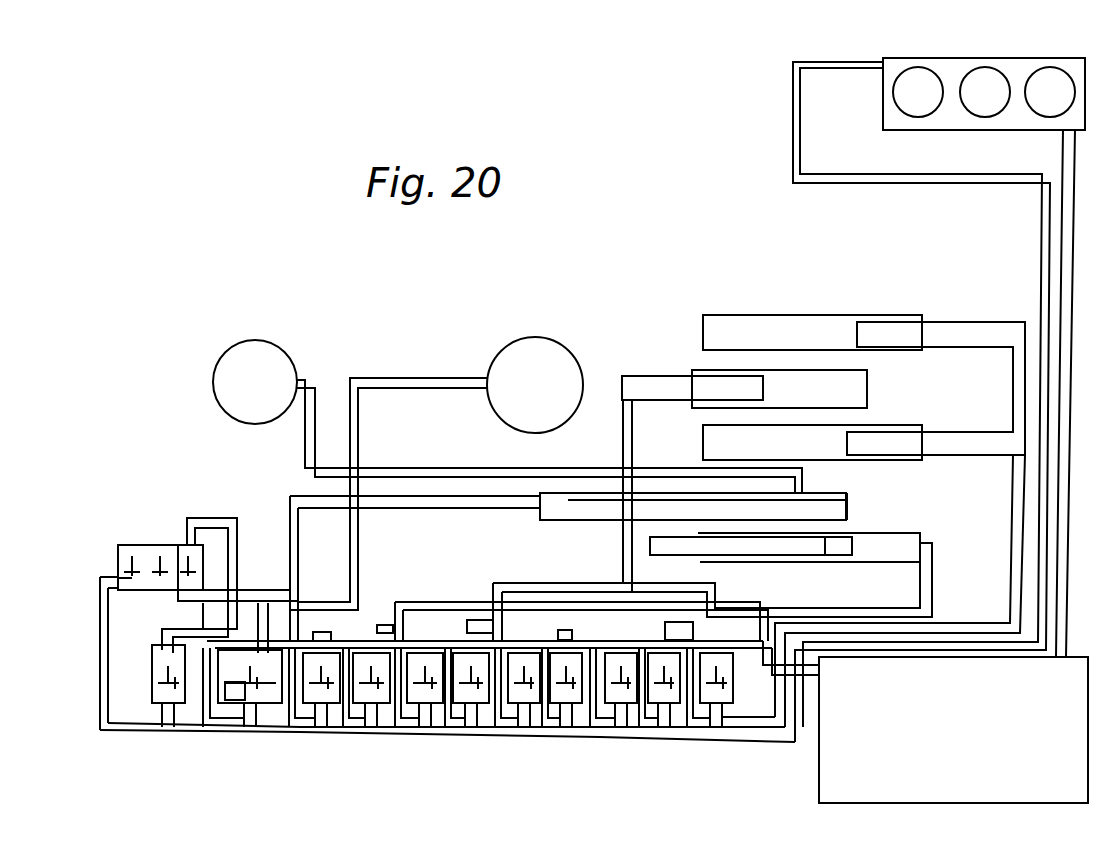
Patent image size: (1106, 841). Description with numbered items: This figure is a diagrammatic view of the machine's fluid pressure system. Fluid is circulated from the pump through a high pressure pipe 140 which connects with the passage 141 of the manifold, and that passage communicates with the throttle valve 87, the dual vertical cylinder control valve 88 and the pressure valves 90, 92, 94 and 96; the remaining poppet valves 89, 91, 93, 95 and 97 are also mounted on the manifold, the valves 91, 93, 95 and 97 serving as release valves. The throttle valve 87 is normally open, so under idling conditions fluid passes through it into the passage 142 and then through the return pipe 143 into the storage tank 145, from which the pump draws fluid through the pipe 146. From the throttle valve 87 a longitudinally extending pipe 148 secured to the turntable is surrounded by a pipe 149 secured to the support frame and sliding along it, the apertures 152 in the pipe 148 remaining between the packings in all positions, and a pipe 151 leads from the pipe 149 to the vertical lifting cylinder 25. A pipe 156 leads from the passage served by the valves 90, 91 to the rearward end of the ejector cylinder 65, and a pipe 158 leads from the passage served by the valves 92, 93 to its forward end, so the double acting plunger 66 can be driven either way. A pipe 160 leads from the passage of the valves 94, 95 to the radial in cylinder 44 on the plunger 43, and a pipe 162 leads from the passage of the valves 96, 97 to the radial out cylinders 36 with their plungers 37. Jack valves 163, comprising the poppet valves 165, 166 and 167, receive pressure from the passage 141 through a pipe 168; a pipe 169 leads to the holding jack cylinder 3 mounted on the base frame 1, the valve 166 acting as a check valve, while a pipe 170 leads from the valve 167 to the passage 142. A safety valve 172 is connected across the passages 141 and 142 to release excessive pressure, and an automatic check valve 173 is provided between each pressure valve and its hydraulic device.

The base frame 1 is at (915, 58).
The cylinder 3 is at (555, 360).
The vertical lifting cylinder 25 is at (266, 352).
The hydraulic cylinders 36 is at (816, 318).
The plungers 37 is at (952, 330).
The plunger 43 is at (635, 376).
The cylinder 44 is at (870, 372).
The cylinder 65 is at (852, 563).
The double acting plunger 66 is at (683, 560).
The throttle valve 87 is at (168, 703).
The dual vertical cylinder control valve 88 is at (250, 703).
The poppet valve 89 is at (321, 703).
The pressure valve 90 is at (371, 703).
The release valve 91 is at (425, 703).
The pressure valve 92 is at (471, 703).
The release valve 93 is at (524, 703).
The pressure valve 94 is at (566, 703).
The release valve 95 is at (621, 703).
The pressure valve 96 is at (664, 703).
The release valve 97 is at (716, 703).
The high pressure pipe 140 is at (975, 185).
The passage 141 is at (790, 742).
The passage 142 is at (258, 628).
The return pipe 143 is at (812, 676).
The storage tank 145 is at (838, 775).
The pipe 146 is at (1060, 165).
The pipe 148 is at (462, 513).
The pipe 149 is at (820, 498).
The pipe 151 is at (496, 470).
The apertures 152 is at (572, 495).
The pipe 156 is at (470, 602).
The pipe 158 is at (520, 583).
The pipe 160 is at (622, 450).
The pipe 162 is at (1010, 522).
The jack valves 163 is at (117, 560).
The valve 165 is at (117, 575).
The valve 166 is at (163, 592).
The valve 167 is at (203, 580).
The pipe 168 is at (103, 662).
The pipe 169 is at (350, 565).
The pipe 170 is at (212, 524).
The safety valve 172 is at (203, 630).
The automatic check valve 173 is at (370, 650).